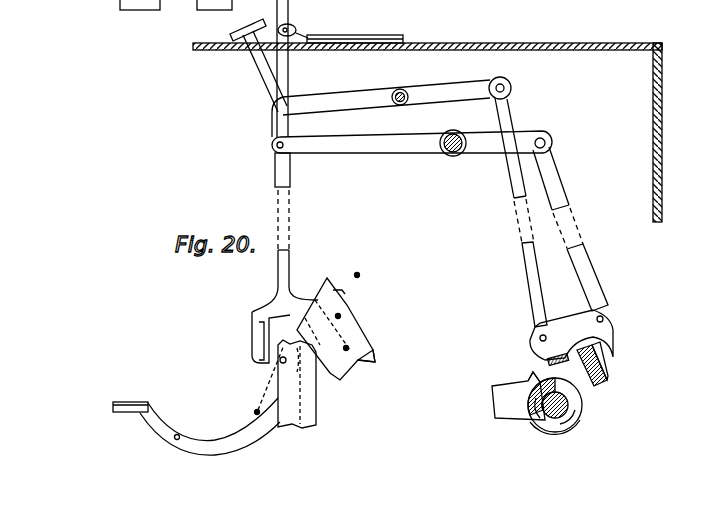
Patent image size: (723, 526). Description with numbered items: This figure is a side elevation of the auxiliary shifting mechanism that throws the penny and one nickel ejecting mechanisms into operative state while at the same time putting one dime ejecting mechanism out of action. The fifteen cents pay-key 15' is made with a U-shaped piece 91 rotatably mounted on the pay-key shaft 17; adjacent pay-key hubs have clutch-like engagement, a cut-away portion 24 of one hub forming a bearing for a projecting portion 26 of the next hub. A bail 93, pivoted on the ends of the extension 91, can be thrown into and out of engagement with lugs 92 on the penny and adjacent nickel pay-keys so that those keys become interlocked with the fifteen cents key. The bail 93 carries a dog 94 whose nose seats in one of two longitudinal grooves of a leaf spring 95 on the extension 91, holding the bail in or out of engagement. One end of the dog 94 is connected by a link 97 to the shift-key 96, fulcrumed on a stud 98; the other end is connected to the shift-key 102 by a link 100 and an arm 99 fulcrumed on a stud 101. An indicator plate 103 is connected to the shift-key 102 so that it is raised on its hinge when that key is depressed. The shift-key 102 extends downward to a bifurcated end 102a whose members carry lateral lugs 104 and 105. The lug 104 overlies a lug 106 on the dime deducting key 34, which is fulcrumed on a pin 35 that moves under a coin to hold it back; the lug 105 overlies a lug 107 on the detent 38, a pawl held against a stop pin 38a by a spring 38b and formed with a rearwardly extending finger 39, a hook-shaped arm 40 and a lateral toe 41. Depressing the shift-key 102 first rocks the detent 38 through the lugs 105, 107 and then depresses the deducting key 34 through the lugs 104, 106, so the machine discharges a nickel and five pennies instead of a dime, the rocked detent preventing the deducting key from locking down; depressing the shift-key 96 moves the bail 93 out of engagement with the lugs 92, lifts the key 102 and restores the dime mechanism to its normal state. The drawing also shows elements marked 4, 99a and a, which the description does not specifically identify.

The sole plate block 4 is at (307, 425).
The fifteen cents pay-key 15' is at (492, 396).
The pay-key shaft 17 is at (560, 406).
The cut-away hub portion 24 is at (548, 431).
The projecting portion 26 is at (528, 412).
The deducting key 34 is at (143, 422).
The pin 35 is at (175, 438).
The detent 38 is at (336, 329).
The stop pin 38a is at (340, 316).
The spring 38b is at (358, 275).
The rearwardly extending finger 39 is at (374, 355).
The hook-shaped arm 40 is at (303, 318).
The lateral toe 41 is at (343, 289).
The U-shaped piece 91 is at (610, 373).
The lug 92 is at (533, 377).
The bail 93 is at (550, 360).
The dog 94 is at (578, 337).
The leaf spring 95 is at (608, 362).
The shift-key 96 is at (266, 76).
The link 97 is at (514, 112).
The stud 98 is at (407, 93).
The arm 99 is at (350, 154).
The pivot 99a is at (490, 158).
The link 100 is at (560, 192).
The stud 101 is at (446, 151).
The shift-key 102 is at (295, 4).
The bifurcated end 102a is at (275, 304).
The indicator plate 103 is at (372, 34).
The lateral lug 104 is at (258, 341).
The lateral lug 105 is at (347, 347).
The lug 106 is at (256, 410).
The lug 107 is at (341, 371).
The frame plate a is at (470, 44).